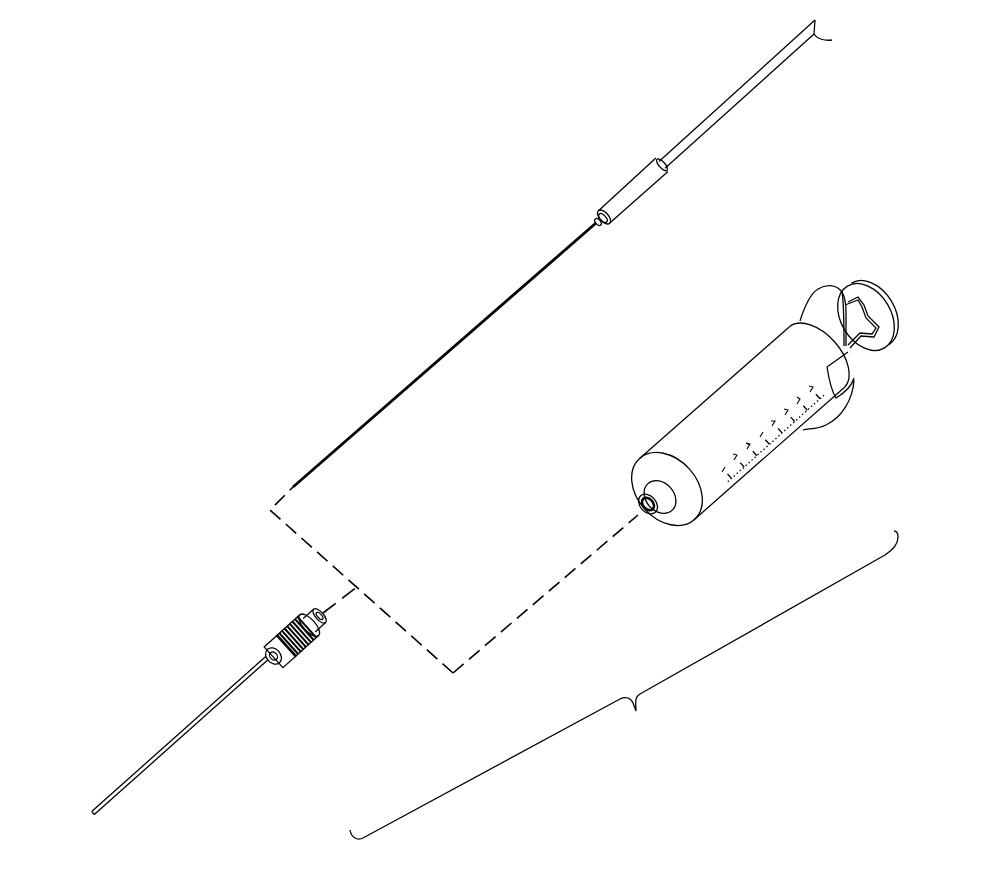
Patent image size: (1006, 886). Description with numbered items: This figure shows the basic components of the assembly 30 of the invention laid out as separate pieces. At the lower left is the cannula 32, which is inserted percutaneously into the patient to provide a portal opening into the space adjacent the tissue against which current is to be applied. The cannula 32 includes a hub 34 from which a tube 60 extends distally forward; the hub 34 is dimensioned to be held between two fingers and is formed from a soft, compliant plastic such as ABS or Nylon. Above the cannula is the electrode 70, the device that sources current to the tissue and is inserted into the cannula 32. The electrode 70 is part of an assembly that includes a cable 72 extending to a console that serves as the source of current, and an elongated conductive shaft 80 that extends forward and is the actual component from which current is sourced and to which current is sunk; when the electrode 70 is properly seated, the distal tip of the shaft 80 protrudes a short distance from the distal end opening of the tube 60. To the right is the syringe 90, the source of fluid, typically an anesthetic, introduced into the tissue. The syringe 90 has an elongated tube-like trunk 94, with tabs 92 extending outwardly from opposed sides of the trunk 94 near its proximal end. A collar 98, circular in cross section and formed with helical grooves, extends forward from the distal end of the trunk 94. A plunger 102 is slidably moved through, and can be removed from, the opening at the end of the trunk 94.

The assembly 30 is at (278, 403).
The cannula 32 is at (240, 747).
The hub 34 is at (273, 643).
The tube 60 is at (168, 742).
The electrode 70 is at (602, 235).
The cable 72 is at (708, 110).
The conductive shaft 80 is at (405, 395).
The syringe 90 is at (753, 488).
The tabs 92 is at (818, 293).
The trunk 94 is at (744, 437).
The collar 98 is at (663, 495).
The plunger 102 is at (886, 300).